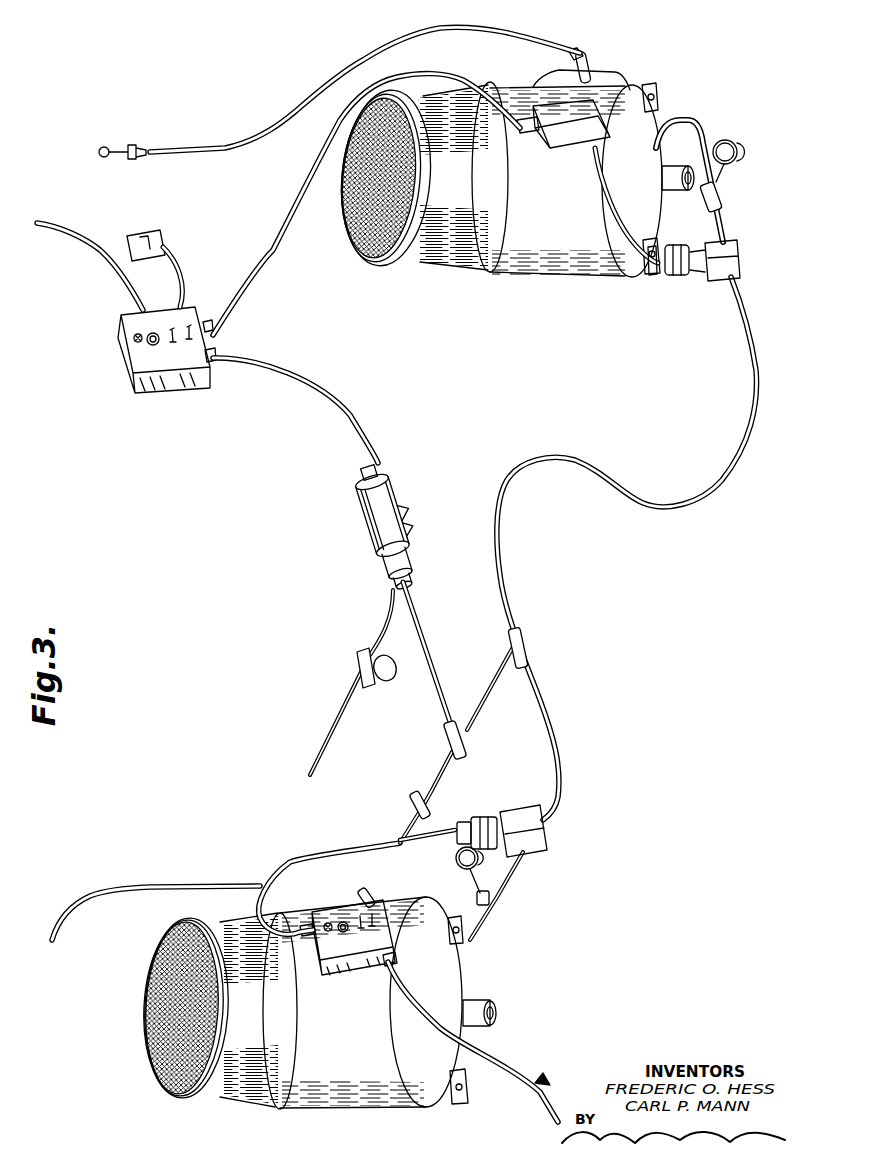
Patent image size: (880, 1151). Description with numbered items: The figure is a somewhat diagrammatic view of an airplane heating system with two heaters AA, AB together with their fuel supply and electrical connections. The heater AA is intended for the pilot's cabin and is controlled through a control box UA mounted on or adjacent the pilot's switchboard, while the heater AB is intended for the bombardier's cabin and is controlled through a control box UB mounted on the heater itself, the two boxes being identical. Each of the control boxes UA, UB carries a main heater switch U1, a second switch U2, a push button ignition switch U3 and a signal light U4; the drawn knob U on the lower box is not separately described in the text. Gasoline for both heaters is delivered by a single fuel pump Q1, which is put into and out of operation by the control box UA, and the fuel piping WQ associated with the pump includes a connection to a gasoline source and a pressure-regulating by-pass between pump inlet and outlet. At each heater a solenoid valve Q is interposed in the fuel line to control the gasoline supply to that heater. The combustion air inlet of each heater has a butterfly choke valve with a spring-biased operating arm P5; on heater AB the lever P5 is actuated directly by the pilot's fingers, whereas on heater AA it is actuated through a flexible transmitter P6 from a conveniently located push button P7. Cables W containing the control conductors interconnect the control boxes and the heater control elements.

The heater AA is at (514, 173).
The heater AB is at (317, 1003).
The cables W is at (537, 1082).
The operating arm P5 is at (378, 893).
The flexible transmitter P6 is at (572, 55).
The push button P7 is at (103, 150).
The solenoid valve Q is at (553, 857).
The fuel pump Q1 is at (360, 530).
The fuel piping WQ is at (483, 933).
The control box UA is at (193, 367).
The control box UB is at (360, 960).
The control knob U is at (327, 932).
The main heater switch U1 is at (359, 922).
The second switch U2 is at (383, 928).
The push button ignition switch U3 is at (341, 925).
The signal light U4 is at (137, 343).